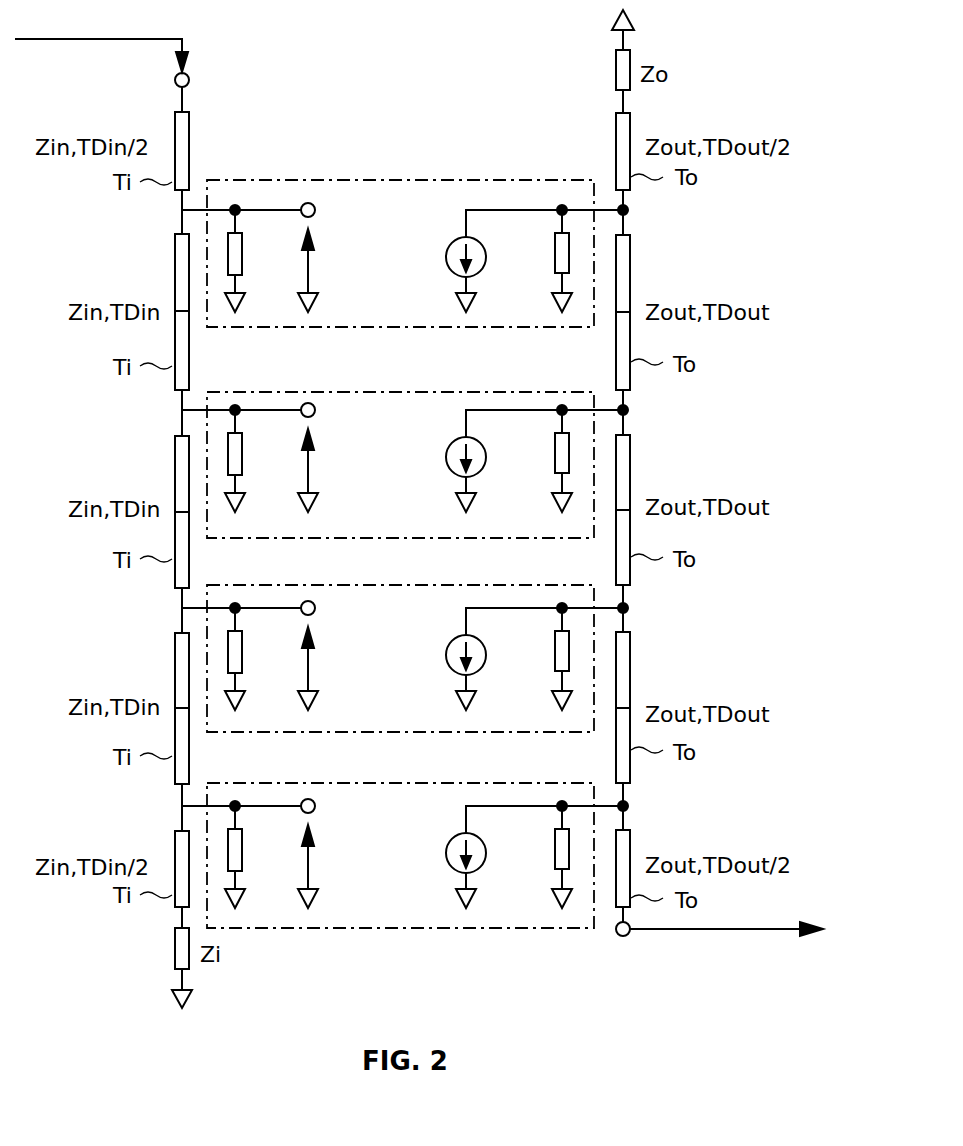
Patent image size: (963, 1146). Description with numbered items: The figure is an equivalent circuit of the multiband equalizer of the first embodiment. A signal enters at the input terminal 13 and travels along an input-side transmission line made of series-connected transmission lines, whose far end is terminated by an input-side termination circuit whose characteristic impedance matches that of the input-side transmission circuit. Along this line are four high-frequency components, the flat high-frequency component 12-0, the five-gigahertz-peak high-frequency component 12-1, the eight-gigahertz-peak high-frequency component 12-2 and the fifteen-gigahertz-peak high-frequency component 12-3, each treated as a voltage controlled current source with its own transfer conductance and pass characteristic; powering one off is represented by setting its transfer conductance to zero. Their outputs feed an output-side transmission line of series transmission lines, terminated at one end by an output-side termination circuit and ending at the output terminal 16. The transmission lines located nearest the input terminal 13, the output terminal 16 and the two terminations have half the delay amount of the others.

The input terminal 13 is at (174, 80).
The output terminal 16 is at (621, 937).
The high-frequency component EQ0 12-0 is at (527, 180).
The high-frequency component EQ1 12-1 is at (533, 392).
The high-frequency component EQ2 12-2 is at (535, 585).
The high-frequency component EQ3 12-3 is at (550, 783).